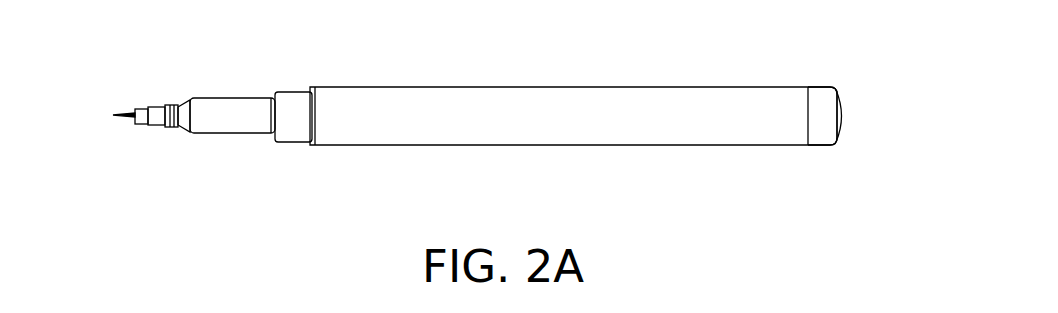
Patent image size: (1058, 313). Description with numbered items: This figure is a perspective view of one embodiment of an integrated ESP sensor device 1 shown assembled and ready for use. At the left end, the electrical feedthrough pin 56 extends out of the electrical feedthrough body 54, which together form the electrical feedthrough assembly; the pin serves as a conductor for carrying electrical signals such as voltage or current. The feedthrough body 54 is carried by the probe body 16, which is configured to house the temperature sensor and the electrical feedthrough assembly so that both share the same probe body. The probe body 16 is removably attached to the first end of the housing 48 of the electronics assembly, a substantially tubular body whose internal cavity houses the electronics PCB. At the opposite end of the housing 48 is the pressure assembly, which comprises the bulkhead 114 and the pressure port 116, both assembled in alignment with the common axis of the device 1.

The device 1 is at (715, 63).
The probe body 16 is at (243, 120).
The housing 48 is at (535, 132).
The electrical feedthrough body 54 is at (157, 118).
The electrical feedthrough pin 56 is at (113, 115).
The bulkhead 114 is at (818, 130).
The pressure port 116 is at (845, 112).